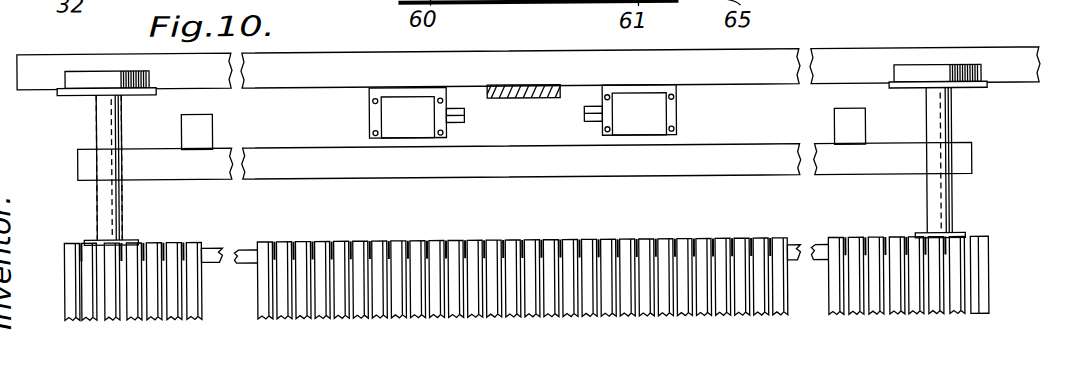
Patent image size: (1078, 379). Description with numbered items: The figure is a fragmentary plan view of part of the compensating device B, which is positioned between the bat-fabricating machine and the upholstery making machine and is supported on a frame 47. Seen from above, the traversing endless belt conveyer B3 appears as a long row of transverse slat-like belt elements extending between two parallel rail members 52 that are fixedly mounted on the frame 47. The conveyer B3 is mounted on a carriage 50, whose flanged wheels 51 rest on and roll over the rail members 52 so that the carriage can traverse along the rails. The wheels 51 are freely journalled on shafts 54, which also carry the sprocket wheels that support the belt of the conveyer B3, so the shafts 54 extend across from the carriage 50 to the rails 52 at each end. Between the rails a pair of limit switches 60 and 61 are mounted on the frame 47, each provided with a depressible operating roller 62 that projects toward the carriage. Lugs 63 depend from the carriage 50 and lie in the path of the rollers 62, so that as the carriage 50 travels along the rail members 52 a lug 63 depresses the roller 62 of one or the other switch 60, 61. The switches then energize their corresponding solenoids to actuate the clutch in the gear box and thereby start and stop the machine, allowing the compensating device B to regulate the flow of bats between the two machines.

The carriage 50 is at (330, 133).
The rail members 52 is at (538, 62).
The flanged wheels 51 is at (91, 74).
The shafts 54 is at (120, 209).
The lugs 63 is at (202, 131).
The limit switch 60 is at (405, 127).
The limit switch 61 is at (645, 128).
The depressible operating rollers 62 is at (466, 120).
The frame 47 is at (517, 103).
The compensating device B is at (93, 141).
The traversing conveyer B3 is at (647, 247).